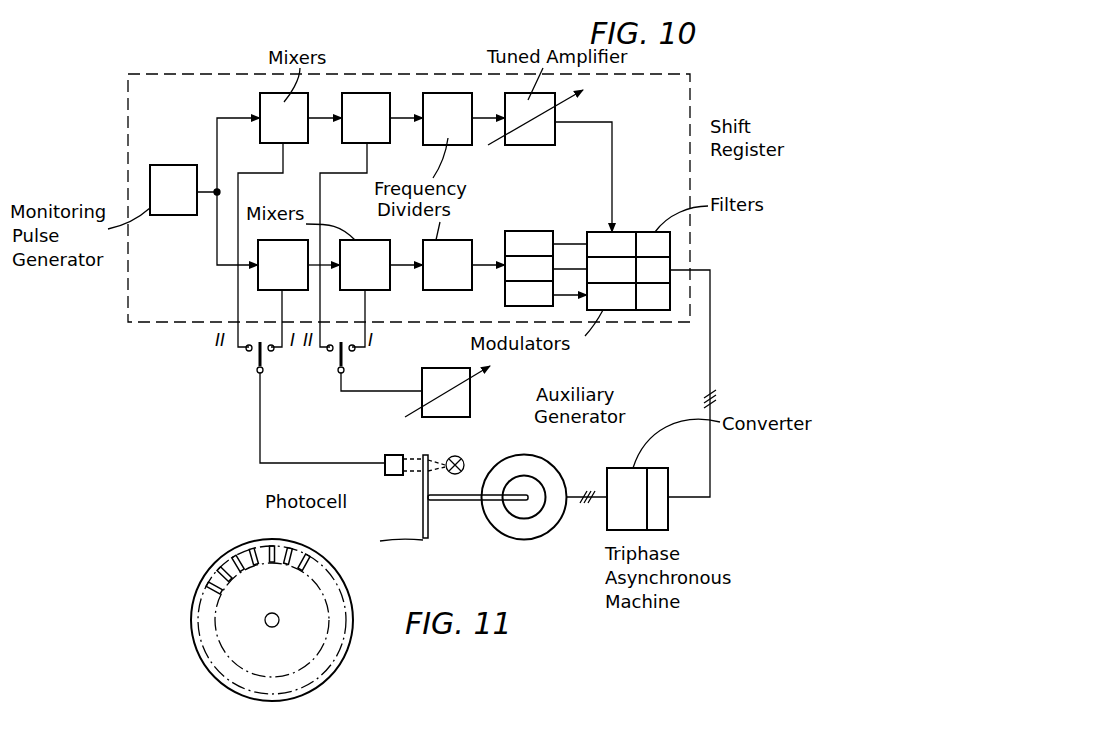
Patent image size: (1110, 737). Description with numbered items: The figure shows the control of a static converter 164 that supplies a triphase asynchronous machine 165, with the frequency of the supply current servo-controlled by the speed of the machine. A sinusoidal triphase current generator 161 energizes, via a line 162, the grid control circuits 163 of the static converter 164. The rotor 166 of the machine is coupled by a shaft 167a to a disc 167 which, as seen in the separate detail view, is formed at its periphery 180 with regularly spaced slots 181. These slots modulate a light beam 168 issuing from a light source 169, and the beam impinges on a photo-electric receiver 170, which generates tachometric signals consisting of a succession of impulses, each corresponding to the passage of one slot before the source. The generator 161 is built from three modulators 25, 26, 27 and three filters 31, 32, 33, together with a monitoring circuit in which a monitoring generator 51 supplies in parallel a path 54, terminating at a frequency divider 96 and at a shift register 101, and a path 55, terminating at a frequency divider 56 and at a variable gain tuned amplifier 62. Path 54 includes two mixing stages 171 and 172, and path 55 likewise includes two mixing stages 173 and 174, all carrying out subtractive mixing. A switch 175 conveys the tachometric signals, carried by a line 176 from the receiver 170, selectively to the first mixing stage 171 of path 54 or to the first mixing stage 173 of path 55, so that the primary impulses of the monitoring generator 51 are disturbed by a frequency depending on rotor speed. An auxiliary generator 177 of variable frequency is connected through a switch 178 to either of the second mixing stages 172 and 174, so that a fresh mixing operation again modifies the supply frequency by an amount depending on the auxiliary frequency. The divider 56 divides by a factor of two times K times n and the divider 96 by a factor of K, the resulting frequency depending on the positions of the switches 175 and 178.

In FIG. 10, the sinusoidal triphase current generator 161 is at (379, 74).
In FIG. 10, the monitoring generator 51 is at (173, 190).
In FIG. 10, the path 54 is at (217, 262).
In FIG. 10, the path 55 is at (217, 132).
In FIG. 10, the mixing stage 173 is at (290, 220).
In FIG. 10, the mixing stage 174 is at (371, 220).
In FIG. 10, the mixing stage 171 is at (299, 293).
In FIG. 10, the mixing stage 172 is at (381, 293).
In FIG. 10, the frequency divider 56 is at (464, 119).
In FIG. 10, the frequency divider 96 is at (464, 265).
In FIG. 10, the variable gain tuned amplifier 62 is at (532, 138).
In FIG. 10, the shift register 101 is at (700, 140).
In FIG. 10, the modulator 25 is at (611, 244).
In FIG. 10, the modulator 26 is at (611, 270).
In FIG. 10, the modulator 27 is at (611, 296).
In FIG. 10, the filter 31 is at (653, 244).
In FIG. 10, the filter 32 is at (653, 270).
In FIG. 10, the filter 33 is at (653, 296).
In FIG. 10, the line 162 is at (706, 352).
In FIG. 10, the switch 175 is at (256, 359).
In FIG. 10, the switch 178 is at (351, 360).
In FIG. 10, the auxiliary generator 177 is at (470, 397).
In FIG. 10, the line 176 is at (298, 463).
In FIG. 10, the photo-electric receiver 170 is at (392, 475).
In FIG. 10, the light beam 168 is at (435, 459).
In FIG. 10, the light source 169 is at (464, 459).
In FIG. 10, the disc 167 is at (384, 541).
In FIG. 11, the disc 167 is at (272, 620).
In FIG. 10, the shaft 167a is at (455, 505).
In FIG. 11, the shaft 167a is at (272, 613).
In FIG. 10, the triphase asynchronous machine 165 is at (548, 463).
In FIG. 10, the rotor 166 is at (533, 510).
In FIG. 10, the static converter 164 is at (618, 468).
In FIG. 10, the grid control circuits 163 is at (662, 468).
In FIG. 11, the slots 181 is at (234, 572).
In FIG. 11, the periphery 180 is at (318, 660).